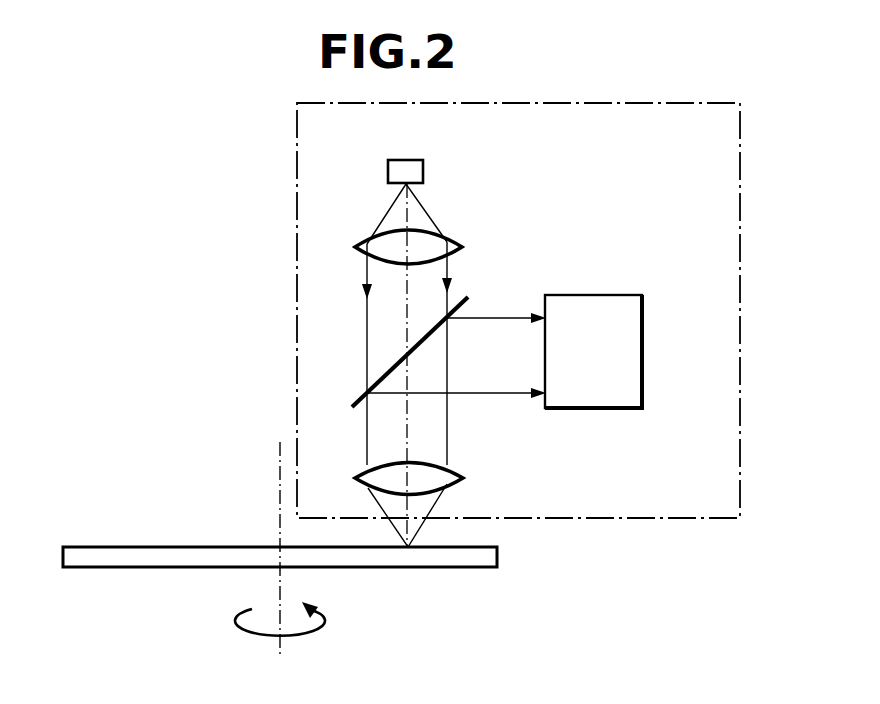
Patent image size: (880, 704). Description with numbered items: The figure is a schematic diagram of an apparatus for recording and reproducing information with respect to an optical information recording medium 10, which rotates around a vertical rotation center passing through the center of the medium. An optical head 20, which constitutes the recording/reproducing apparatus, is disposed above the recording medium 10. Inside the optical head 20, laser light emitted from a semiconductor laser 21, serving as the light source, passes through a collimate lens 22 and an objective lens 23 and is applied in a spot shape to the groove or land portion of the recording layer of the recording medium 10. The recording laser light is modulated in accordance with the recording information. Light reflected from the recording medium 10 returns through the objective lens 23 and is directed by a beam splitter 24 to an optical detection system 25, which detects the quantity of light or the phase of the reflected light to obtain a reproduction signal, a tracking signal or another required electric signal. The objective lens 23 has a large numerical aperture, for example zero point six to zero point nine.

The optical information recording medium 10 is at (120, 557).
The optical head 20 is at (297, 182).
The semiconductor laser 21 is at (425, 172).
The collimate lens 22 is at (425, 244).
The objective lens 23 is at (433, 467).
The beam splitter 24 is at (388, 371).
The optical detection system 25 is at (618, 300).